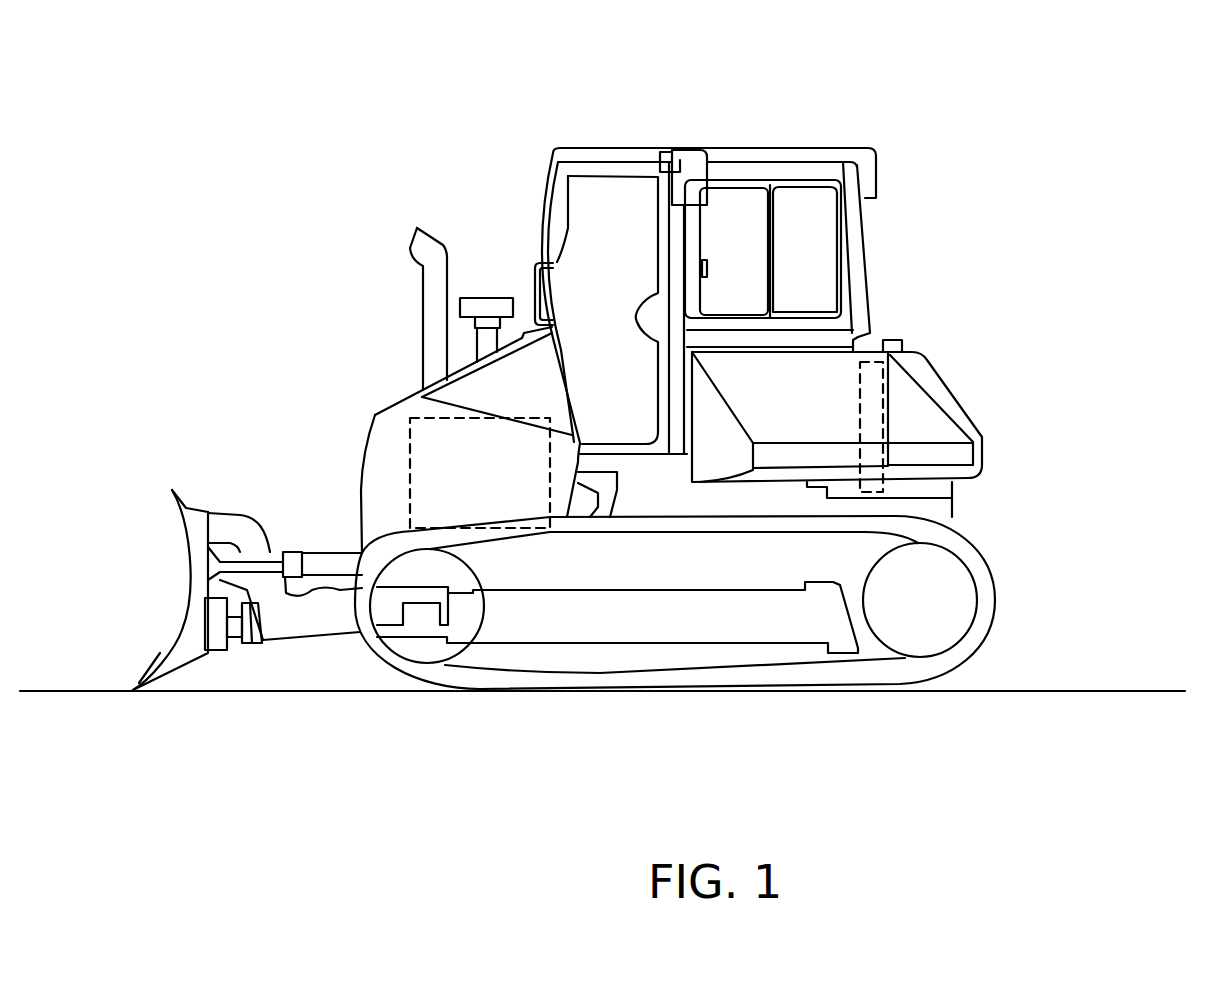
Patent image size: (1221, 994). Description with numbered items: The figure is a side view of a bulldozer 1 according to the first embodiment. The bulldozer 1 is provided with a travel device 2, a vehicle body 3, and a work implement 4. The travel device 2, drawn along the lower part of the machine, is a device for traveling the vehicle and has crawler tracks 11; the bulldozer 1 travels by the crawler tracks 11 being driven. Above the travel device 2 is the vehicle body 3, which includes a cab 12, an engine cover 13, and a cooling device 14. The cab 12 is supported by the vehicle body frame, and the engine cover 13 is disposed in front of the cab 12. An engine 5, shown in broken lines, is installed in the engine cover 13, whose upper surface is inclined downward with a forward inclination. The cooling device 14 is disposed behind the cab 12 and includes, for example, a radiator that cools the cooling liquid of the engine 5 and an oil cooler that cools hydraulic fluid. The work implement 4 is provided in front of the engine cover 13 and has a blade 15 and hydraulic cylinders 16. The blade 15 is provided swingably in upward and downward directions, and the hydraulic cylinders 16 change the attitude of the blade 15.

The bulldozer 1 is at (212, 126).
The travel device 2 is at (1034, 576).
The vehicle body 3 is at (942, 228).
The work implement 4 is at (146, 432).
The engine 5 is at (408, 452).
The crawler tracks 11 is at (985, 546).
The cab 12 is at (654, 166).
The engine cover 13 is at (397, 410).
The cooling device 14 is at (890, 411).
The blade 15 is at (180, 662).
The hydraulic cylinders 16 is at (325, 565).